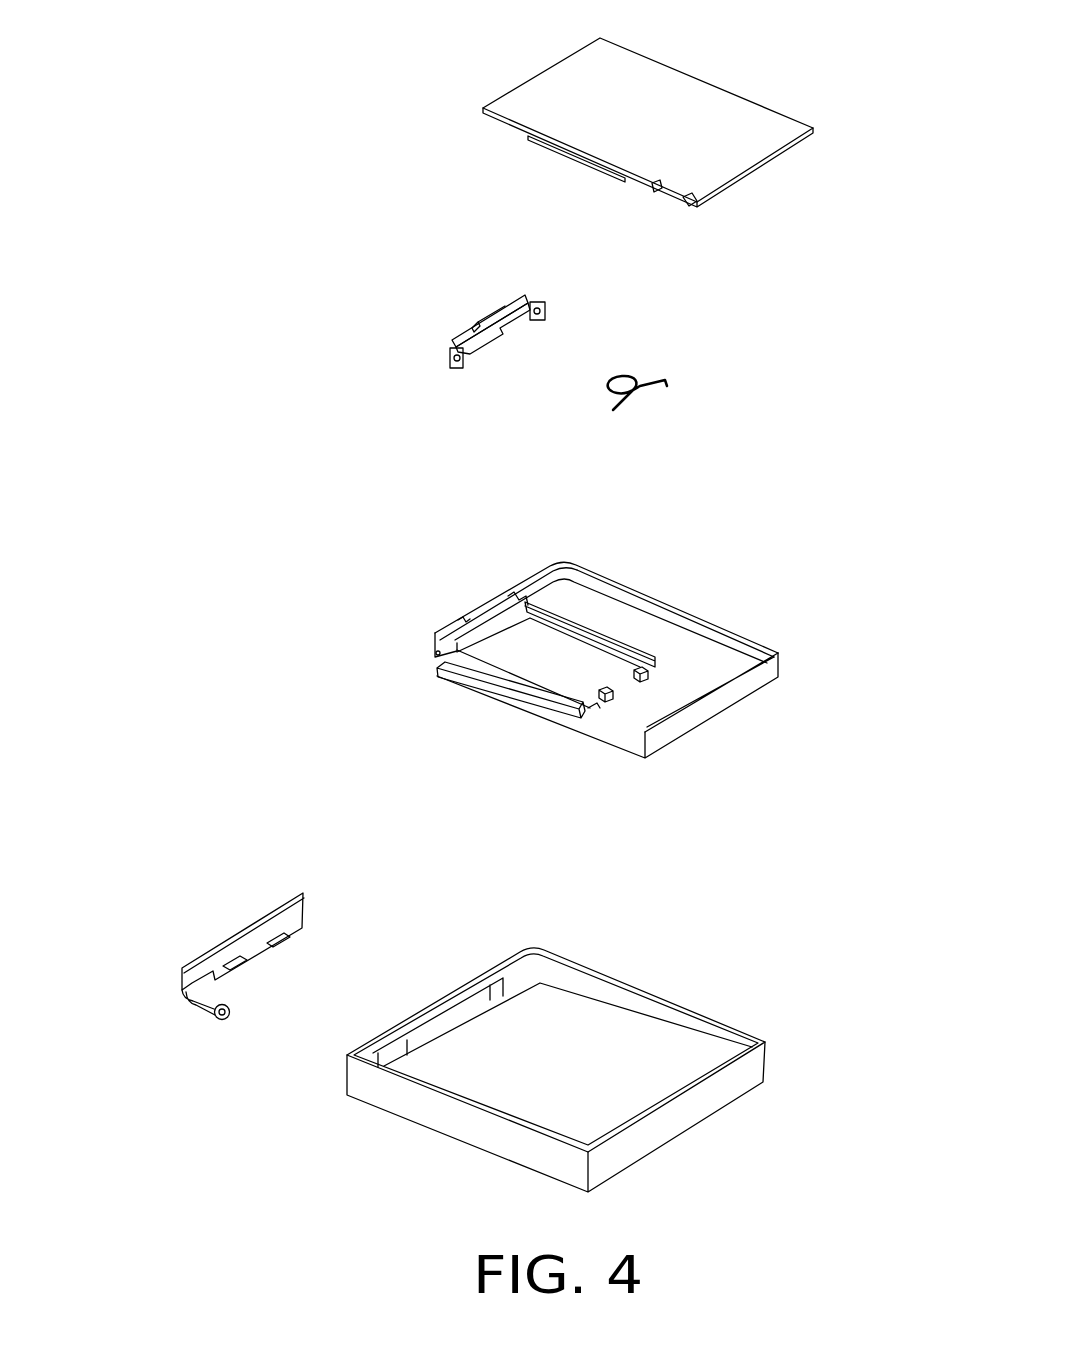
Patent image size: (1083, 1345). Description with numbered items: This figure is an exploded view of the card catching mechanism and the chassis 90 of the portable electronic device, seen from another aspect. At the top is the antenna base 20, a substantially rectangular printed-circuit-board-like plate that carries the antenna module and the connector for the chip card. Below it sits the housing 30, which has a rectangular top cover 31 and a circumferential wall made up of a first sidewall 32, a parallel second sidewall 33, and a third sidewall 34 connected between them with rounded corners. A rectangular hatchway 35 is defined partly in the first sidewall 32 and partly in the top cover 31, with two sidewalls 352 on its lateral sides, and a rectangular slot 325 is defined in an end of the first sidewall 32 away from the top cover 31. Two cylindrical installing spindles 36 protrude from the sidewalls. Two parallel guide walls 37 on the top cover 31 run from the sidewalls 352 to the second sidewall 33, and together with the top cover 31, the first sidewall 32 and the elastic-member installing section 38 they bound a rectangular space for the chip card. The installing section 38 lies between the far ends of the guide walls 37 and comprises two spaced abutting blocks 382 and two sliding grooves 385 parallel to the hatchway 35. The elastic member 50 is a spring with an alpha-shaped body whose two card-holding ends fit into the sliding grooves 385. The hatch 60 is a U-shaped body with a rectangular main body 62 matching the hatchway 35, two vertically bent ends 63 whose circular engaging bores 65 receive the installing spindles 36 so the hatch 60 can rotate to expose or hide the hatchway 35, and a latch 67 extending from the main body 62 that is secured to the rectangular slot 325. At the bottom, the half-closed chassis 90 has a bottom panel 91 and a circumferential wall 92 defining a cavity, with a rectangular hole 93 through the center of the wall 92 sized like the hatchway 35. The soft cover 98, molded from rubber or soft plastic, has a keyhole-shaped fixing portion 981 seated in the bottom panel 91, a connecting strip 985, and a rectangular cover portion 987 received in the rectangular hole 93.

The antenna base 20 is at (680, 63).
The housing 30 is at (609, 693).
The top cover 31 is at (713, 667).
The first sidewall 32 is at (527, 572).
The second sidewall 33 is at (690, 710).
The third sidewall 34 is at (683, 610).
The hatchway 35 is at (482, 632).
The installing spindles 36 is at (437, 653).
The guide walls 37 is at (578, 627).
The elastic-member installing section 38 is at (579, 768).
The rectangular slot 325 is at (477, 610).
The sidewalls 352 is at (447, 628).
The abutting blocks 382 is at (607, 703).
The sliding grooves 385 is at (593, 710).
The elastic member 50 is at (645, 367).
The hatch 60 is at (448, 334).
The main body 62 is at (512, 315).
The bent ends 63 is at (468, 363).
The engaging bores 65 is at (452, 362).
The latch 67 is at (497, 307).
The chassis 90 is at (415, 963).
The bottom panel 91 is at (556, 1044).
The circumferential wall 92 is at (513, 973).
The rectangular hole 93 is at (448, 1018).
The soft cover 98 is at (184, 983).
The fixing portion 981 is at (232, 1013).
The connecting strip 985 is at (177, 990).
The cover portion 987 is at (277, 907).